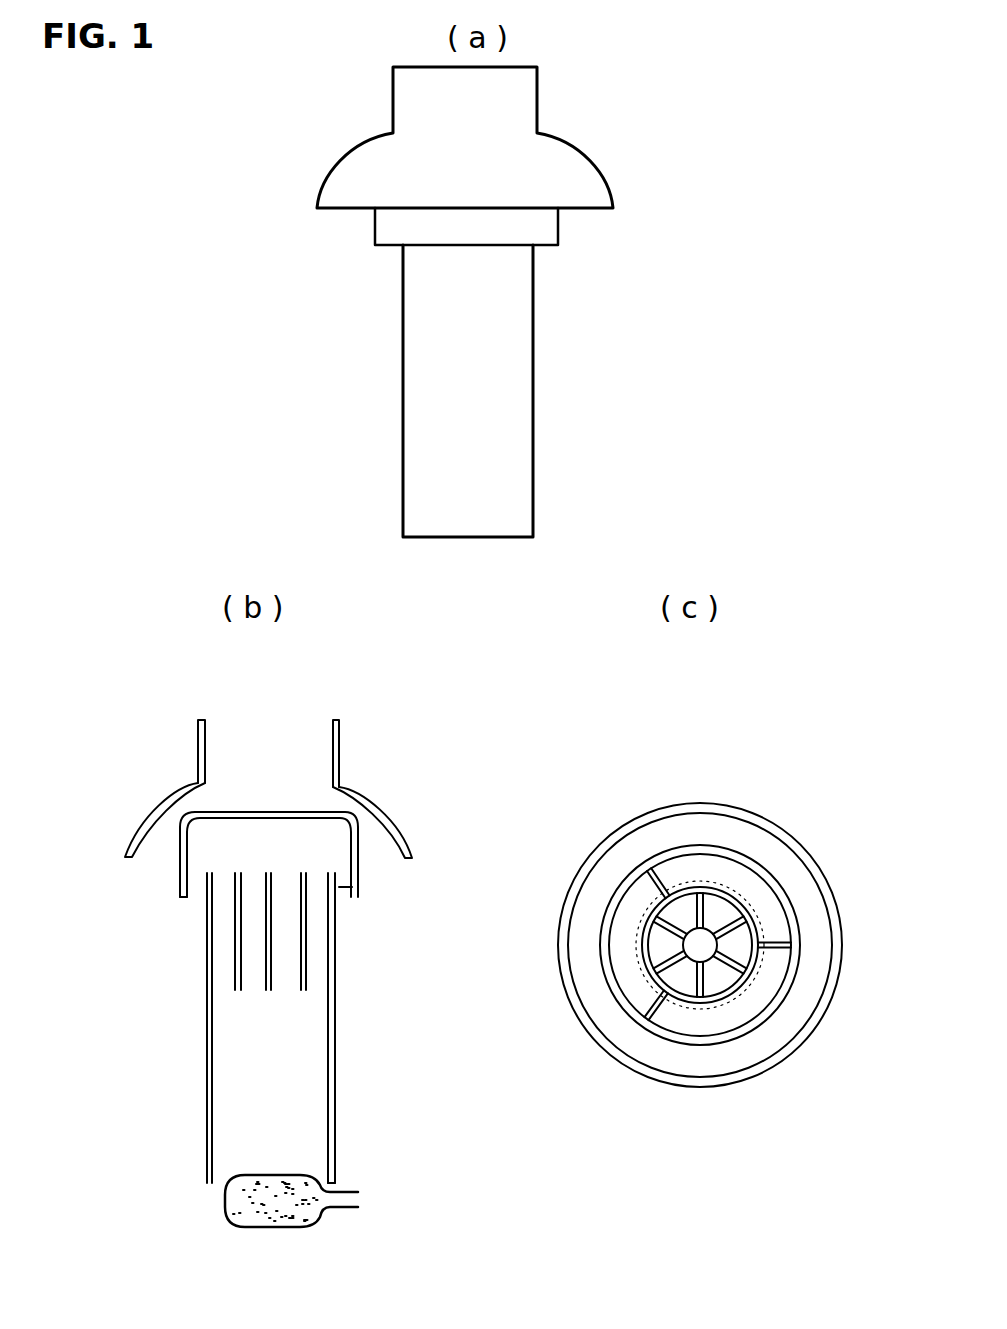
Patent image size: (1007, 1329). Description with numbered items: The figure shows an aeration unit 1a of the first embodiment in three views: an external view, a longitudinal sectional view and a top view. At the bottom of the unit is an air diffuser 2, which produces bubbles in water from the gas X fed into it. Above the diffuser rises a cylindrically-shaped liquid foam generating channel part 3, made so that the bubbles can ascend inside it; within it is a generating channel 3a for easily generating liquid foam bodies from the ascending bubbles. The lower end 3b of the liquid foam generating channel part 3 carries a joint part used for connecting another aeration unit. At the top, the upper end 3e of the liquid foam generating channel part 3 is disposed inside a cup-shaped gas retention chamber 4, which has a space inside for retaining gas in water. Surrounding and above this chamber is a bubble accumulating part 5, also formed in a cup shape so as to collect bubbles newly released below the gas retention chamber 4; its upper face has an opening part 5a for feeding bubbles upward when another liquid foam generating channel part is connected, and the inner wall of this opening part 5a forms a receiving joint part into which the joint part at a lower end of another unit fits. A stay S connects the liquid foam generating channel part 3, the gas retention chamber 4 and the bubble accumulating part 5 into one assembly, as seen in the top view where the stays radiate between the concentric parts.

The aeration unit 1a is at (311, 113).
The air diffuser 2 is at (227, 1202).
The liquid foam generating channel part 3 is at (533, 413).
The generating channel 3a is at (237, 970).
The lower end 3b is at (332, 1175).
The upper end 3e is at (207, 873).
The gas retention chamber 4 is at (558, 222).
The bubble accumulating part 5 is at (598, 165).
The opening part 5a is at (207, 747).
The stay S is at (208, 798).
The gas X is at (385, 1210).